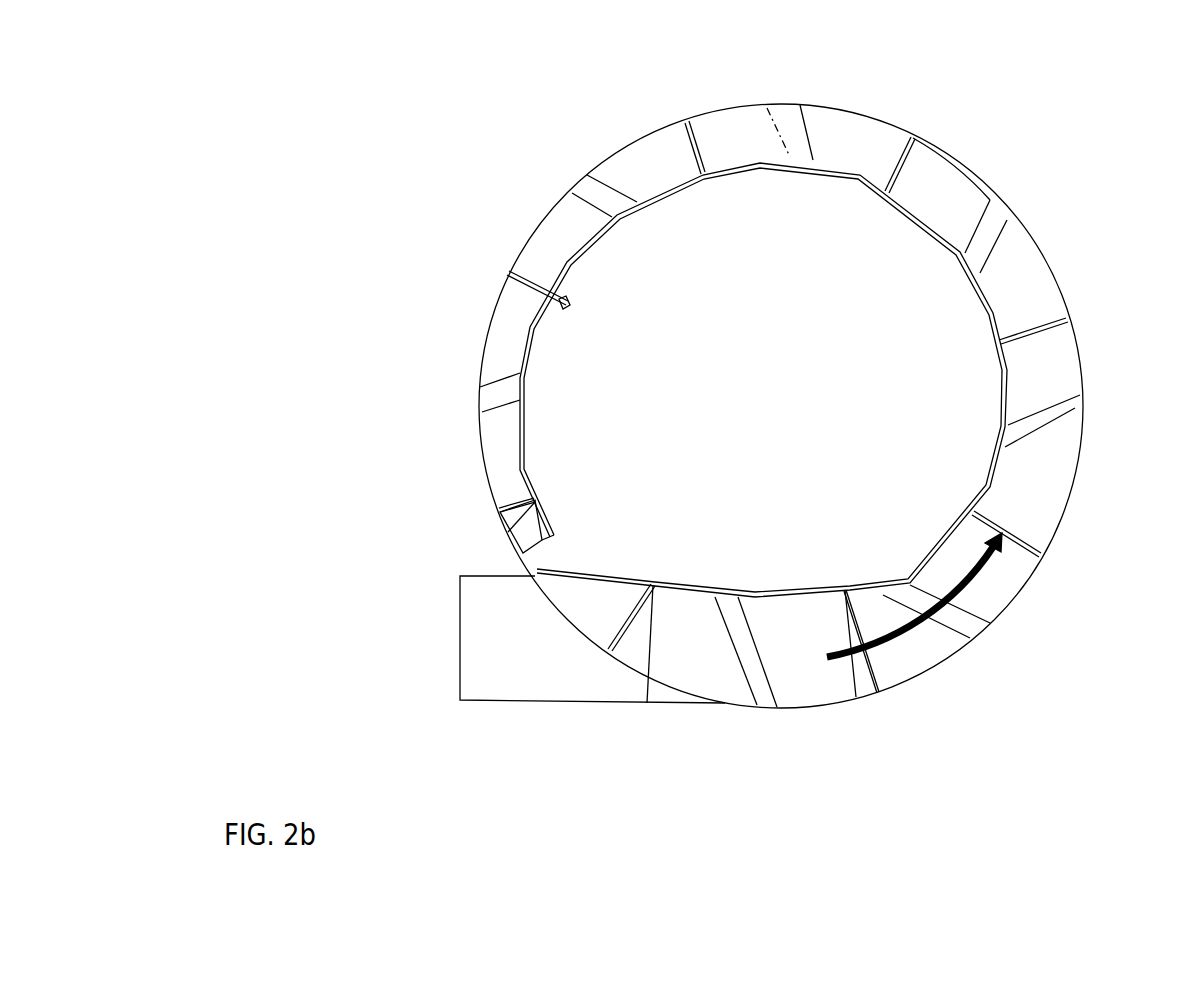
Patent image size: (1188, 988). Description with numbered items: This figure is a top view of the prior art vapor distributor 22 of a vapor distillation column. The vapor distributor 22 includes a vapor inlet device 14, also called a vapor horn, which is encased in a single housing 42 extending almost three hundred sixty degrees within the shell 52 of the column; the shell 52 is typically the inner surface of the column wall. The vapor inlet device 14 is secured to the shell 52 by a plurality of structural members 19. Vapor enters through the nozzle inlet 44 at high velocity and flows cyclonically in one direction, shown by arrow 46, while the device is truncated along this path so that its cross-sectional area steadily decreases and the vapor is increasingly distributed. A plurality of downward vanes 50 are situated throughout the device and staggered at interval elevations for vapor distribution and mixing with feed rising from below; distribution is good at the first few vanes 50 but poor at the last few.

The vapor inlet device 14 is at (621, 148).
The structural members 19 is at (507, 275).
The vapor distributor 22 is at (450, 188).
The housing 42 is at (844, 146).
The nozzle inlet 44 is at (678, 648).
The direction of vapor flow 46 is at (922, 630).
The downward vanes 50 is at (997, 231).
The shell 52 is at (962, 157).